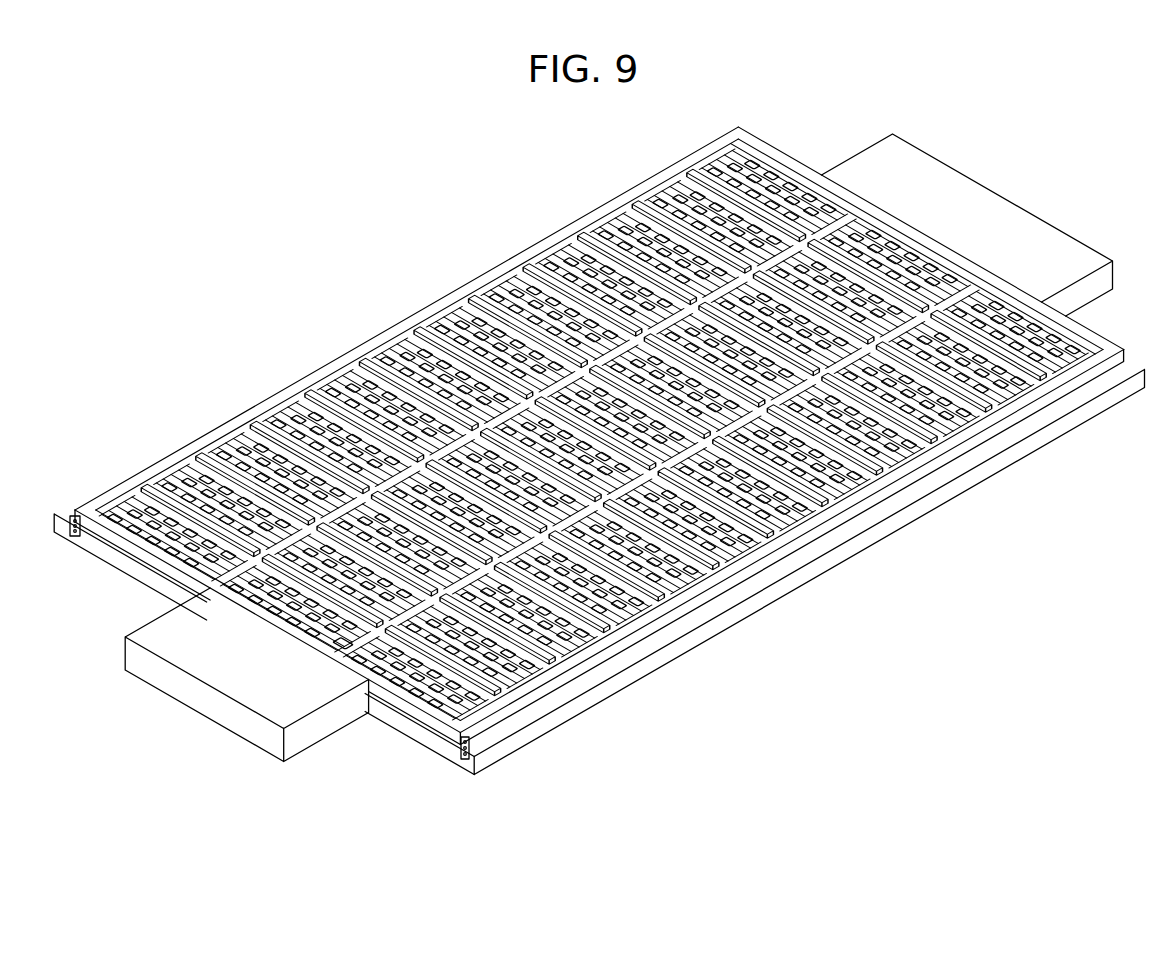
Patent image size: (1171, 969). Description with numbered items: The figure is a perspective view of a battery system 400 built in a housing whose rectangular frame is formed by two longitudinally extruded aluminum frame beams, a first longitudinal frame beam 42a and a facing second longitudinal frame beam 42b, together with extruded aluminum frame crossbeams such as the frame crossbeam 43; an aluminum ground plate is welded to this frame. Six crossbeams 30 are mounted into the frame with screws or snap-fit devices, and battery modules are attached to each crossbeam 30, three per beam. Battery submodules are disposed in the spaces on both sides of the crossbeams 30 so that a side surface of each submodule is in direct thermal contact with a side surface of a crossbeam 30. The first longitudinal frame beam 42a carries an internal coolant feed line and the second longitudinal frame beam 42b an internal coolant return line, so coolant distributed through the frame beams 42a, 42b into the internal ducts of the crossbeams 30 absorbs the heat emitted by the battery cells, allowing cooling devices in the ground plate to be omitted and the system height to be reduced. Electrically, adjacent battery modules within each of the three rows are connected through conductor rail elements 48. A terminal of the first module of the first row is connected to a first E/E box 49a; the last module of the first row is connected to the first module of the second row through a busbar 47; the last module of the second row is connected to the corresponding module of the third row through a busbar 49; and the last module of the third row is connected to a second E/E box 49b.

The battery system 400 is at (147, 444).
The crossbeam 30 is at (279, 419).
The conductor rail element 48 is at (197, 446).
The first longitudinal frame beam 42a is at (725, 625).
The second longitudinal frame beam 42b is at (475, 282).
The frame crossbeam 43 is at (405, 722).
The busbar 47 is at (797, 160).
The busbar 49 is at (341, 648).
The first E/E box 49a is at (190, 695).
The second E/E box 49b is at (990, 210).